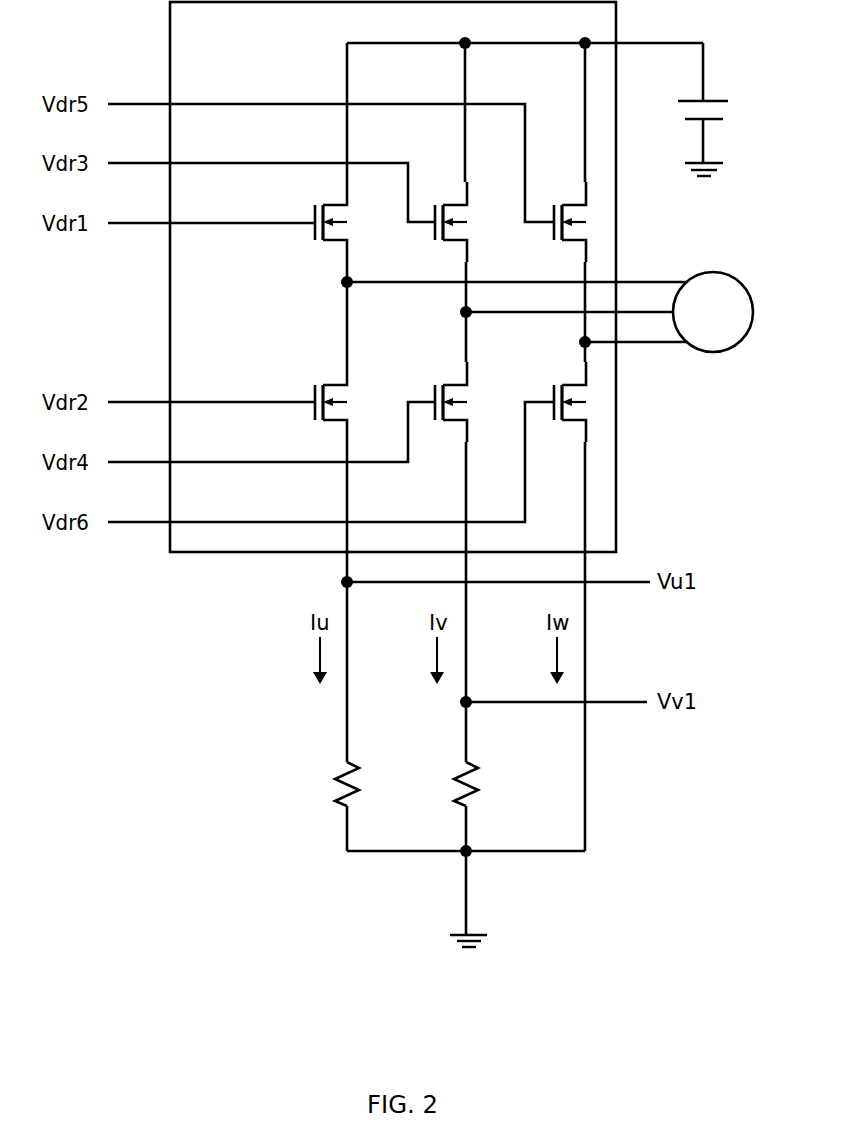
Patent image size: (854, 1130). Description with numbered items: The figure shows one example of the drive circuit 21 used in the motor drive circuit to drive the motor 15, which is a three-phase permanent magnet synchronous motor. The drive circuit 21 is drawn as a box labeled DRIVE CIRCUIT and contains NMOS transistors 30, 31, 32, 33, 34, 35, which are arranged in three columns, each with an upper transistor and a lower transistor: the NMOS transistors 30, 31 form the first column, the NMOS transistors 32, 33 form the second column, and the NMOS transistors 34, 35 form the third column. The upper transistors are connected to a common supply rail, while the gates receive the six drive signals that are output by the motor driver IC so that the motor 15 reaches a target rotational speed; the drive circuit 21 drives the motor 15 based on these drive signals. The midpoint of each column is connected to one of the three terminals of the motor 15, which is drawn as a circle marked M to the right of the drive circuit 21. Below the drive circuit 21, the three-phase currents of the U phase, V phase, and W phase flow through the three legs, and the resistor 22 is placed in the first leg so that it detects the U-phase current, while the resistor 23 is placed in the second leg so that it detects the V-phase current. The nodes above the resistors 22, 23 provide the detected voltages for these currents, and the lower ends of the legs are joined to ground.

The drive circuit 21 is at (167, 73).
The motor 15 is at (707, 273).
The NMOS transistor 30 is at (315, 241).
The NMOS transistor 31 is at (315, 385).
The NMOS transistor 32 is at (436, 241).
The NMOS transistor 33 is at (436, 385).
The NMOS transistor 34 is at (555, 241).
The NMOS transistor 35 is at (555, 385).
The resistor 22 is at (343, 768).
The resistor 23 is at (462, 768).